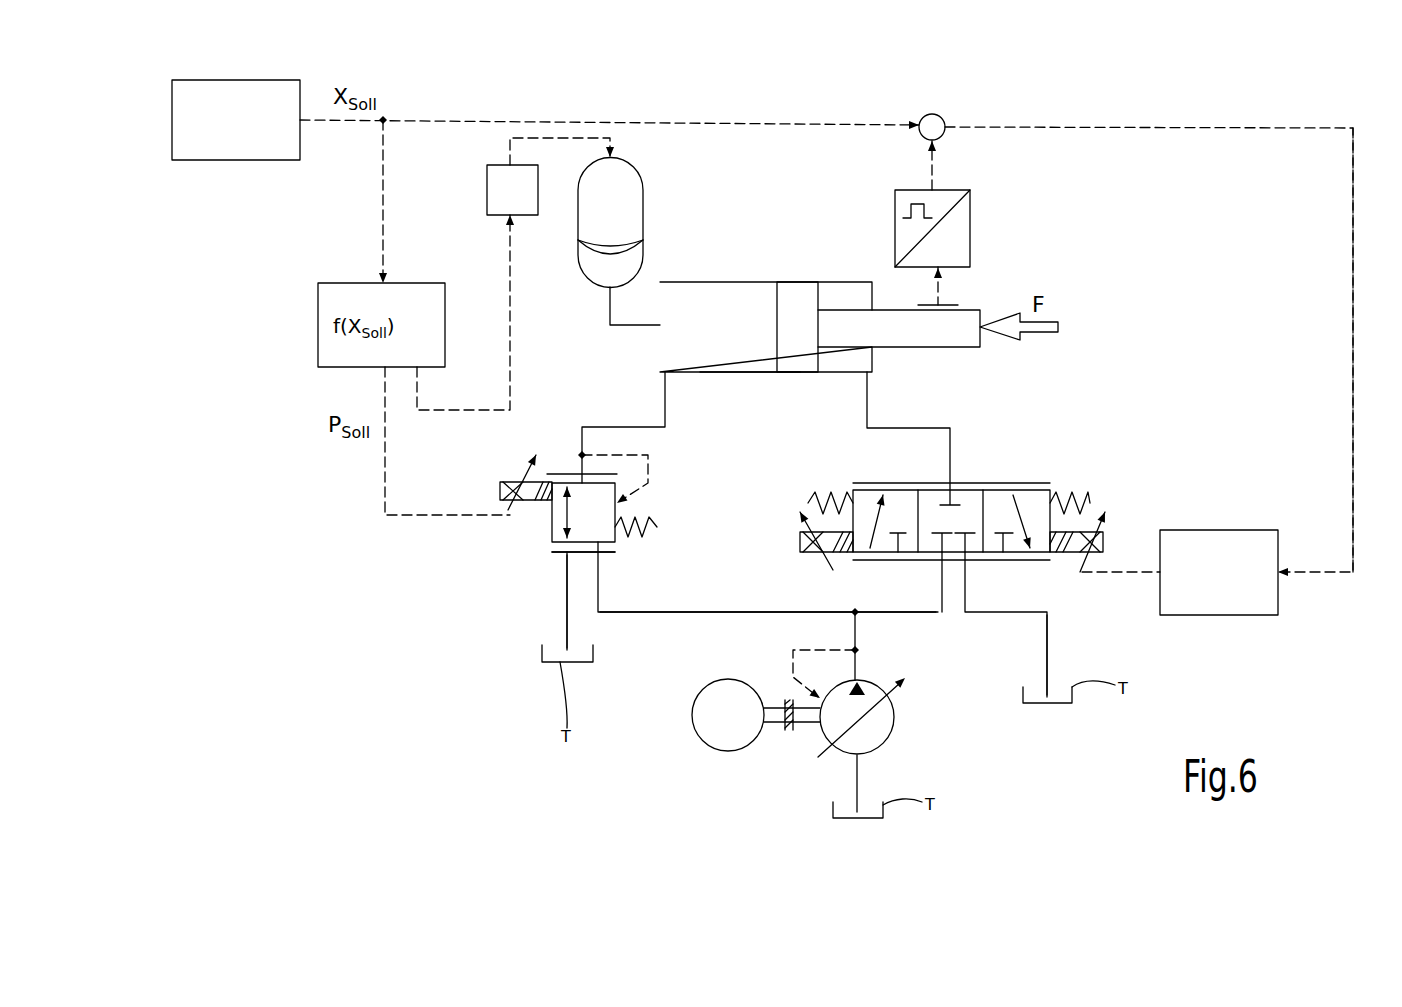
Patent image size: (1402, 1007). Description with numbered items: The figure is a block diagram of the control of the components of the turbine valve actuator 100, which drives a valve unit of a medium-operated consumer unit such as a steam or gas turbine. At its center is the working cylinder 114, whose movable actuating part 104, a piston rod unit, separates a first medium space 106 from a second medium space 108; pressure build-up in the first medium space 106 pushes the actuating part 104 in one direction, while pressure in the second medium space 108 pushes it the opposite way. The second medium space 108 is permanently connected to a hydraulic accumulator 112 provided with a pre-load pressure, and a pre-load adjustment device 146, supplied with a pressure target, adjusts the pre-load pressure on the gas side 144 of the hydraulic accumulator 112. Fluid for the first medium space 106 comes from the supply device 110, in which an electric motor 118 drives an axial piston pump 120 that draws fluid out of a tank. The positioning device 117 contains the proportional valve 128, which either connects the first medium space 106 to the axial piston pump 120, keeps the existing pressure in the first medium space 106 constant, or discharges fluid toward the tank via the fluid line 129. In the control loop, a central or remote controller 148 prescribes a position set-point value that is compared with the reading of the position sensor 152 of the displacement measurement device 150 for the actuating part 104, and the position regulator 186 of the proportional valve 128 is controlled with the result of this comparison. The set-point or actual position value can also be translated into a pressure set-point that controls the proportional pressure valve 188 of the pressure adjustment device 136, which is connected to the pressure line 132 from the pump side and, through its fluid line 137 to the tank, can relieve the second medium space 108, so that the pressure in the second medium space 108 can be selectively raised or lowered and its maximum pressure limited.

The turbine valve actuator 100 is at (1126, 280).
The actuating part 104 is at (788, 282).
The first medium space 106 is at (838, 300).
The second medium space 108 is at (722, 282).
The supply device 110 is at (770, 750).
The hydraulic accumulator 112 is at (644, 215).
The working cylinder 114 is at (745, 372).
The positioning device 117 is at (1055, 470).
The electric motor 118 is at (697, 733).
The axial piston pump 120 is at (893, 710).
The proportional valve 128 is at (990, 483).
The fluid line 129 is at (1048, 647).
The line 132 is at (652, 613).
The pressure adjustment device 136 is at (562, 465).
The fluid line 137 is at (568, 608).
The gas side 144 is at (627, 183).
The pre-load adjustment device 146 is at (488, 183).
The central or remote controller 148 is at (232, 80).
The displacement measurement device 150 is at (890, 186).
The position sensor 152 is at (972, 213).
The position regulator 186 is at (1222, 530).
The proportional pressure valve 188 is at (600, 552).